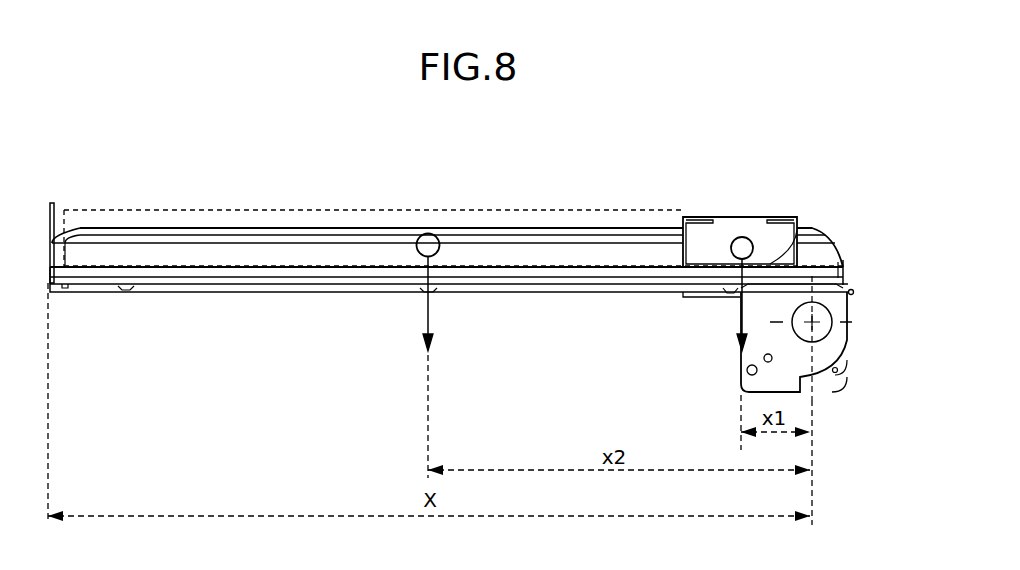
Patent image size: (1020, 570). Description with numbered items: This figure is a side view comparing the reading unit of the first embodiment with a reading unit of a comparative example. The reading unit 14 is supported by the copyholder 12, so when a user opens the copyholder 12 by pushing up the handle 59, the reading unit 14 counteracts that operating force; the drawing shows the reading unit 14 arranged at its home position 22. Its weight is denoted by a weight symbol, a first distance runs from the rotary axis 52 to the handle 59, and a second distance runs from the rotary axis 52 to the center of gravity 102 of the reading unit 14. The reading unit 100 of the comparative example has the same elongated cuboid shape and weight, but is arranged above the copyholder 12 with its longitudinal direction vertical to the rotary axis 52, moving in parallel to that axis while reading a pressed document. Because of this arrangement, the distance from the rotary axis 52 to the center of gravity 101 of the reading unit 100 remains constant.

The copyholder 12 is at (125, 227).
The reading unit 14 is at (708, 217).
The home position 22 is at (770, 264).
The rotary axis 52 is at (812, 322).
The handle 59 is at (50, 213).
The reading unit of the comparative example 100 is at (240, 210).
The center of gravity of the reading unit of the comparative example 101 is at (428, 233).
The center of gravity of the reading unit 102 is at (742, 237).